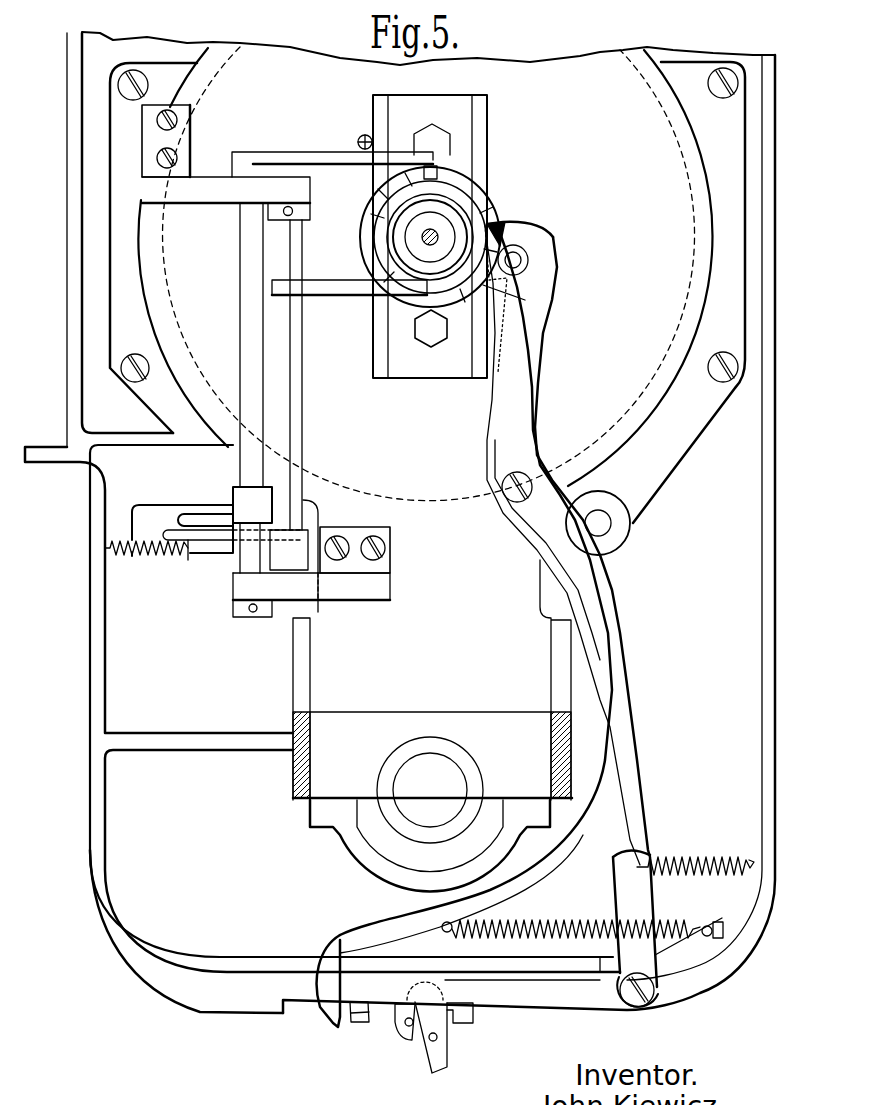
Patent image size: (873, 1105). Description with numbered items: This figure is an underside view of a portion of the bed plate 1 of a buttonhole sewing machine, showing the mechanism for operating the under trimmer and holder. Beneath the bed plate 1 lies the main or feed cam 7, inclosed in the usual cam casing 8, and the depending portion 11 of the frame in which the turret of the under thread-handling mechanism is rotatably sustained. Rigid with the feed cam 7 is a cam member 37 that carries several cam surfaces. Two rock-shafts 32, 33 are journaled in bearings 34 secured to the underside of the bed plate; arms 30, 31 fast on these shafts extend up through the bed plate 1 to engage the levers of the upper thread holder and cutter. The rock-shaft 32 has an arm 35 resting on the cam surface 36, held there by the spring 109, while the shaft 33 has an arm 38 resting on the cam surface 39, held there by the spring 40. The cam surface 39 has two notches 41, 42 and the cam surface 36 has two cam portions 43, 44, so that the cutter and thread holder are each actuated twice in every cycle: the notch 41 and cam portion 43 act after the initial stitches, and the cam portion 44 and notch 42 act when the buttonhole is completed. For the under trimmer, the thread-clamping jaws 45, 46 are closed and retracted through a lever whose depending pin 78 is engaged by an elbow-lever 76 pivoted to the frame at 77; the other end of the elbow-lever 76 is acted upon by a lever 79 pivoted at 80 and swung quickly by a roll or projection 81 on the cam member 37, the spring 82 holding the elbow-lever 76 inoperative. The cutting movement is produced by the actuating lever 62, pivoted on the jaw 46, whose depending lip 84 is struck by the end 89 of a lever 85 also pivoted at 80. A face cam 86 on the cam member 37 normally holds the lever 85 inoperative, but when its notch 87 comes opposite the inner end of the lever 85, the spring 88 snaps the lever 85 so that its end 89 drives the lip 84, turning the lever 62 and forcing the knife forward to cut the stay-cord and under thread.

The bed plate 1 is at (88, 760).
The feed cam 7 is at (633, 77).
The cam casing 8 is at (571, 70).
The depending portion of the sewing machine frame 11 is at (553, 727).
The arm 30 is at (192, 518).
The arm 31 is at (213, 537).
The rock-shaft 32 is at (247, 333).
The rock-shaft 33 is at (297, 412).
The bearings 34 is at (253, 190).
The arm 35 is at (323, 157).
The cam surface 36 is at (472, 187).
The cam member 37 is at (478, 205).
The arm 38 is at (357, 288).
The cam surface 39 is at (462, 292).
The spring 40 is at (363, 135).
The notch 41 is at (477, 213).
The notch 42 is at (378, 270).
The cam portion 43 is at (373, 213).
The cam portion 44 is at (412, 172).
The thread-clamping jaw 45 is at (455, 1030).
The thread-clamping jaw 46 is at (410, 1042).
The actuating lever 62 is at (365, 1006).
The elbow-lever 76 is at (585, 993).
The pivot 77 is at (647, 1005).
The pin 78 is at (436, 1040).
The lever 79 is at (623, 677).
The pivot 80 is at (510, 497).
The roll or projection 81 is at (528, 260).
The spring 82 is at (690, 855).
The depending lip 84 is at (366, 1012).
The lever 85 is at (583, 810).
The face cam 86 is at (485, 222).
The notch 87 is at (525, 300).
The spring 88 is at (573, 922).
The end of lever 85 89 is at (323, 1020).
The spring 109 is at (152, 556).